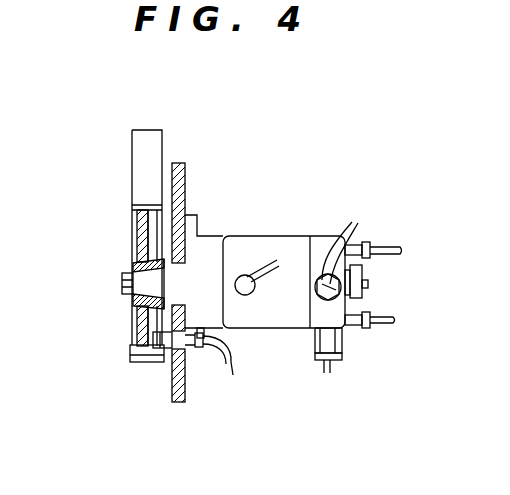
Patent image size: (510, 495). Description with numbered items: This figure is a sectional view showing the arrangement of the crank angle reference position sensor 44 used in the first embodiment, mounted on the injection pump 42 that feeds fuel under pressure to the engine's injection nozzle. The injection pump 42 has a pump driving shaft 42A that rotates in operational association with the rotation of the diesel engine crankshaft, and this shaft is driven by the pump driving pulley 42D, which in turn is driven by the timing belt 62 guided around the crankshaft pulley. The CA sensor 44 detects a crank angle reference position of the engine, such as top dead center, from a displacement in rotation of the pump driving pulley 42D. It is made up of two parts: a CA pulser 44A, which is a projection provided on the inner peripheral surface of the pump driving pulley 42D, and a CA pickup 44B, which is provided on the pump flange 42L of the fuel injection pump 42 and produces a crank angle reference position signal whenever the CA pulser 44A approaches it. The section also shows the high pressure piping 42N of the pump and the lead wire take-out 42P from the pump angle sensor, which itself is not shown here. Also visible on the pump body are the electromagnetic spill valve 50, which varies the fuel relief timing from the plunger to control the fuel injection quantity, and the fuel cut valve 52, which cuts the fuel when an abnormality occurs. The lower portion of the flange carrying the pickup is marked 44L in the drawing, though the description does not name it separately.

The injection pump 42 is at (208, 252).
The pump driving shaft 42A is at (127, 297).
The pump driving pulley 42D is at (131, 345).
The pump flange 42L is at (188, 215).
The high pressure piping 42N is at (385, 246).
The lead wire take-out 42P is at (243, 275).
The crank angle reference position sensor 44 is at (178, 414).
The CA pulser 44A is at (168, 352).
The CA pickup 44B is at (206, 362).
The lower plate 44L is at (188, 396).
The electromagnetic spill valve 50 is at (318, 352).
The fuel cut valve 52 is at (342, 287).
The timing belt 62 is at (132, 168).